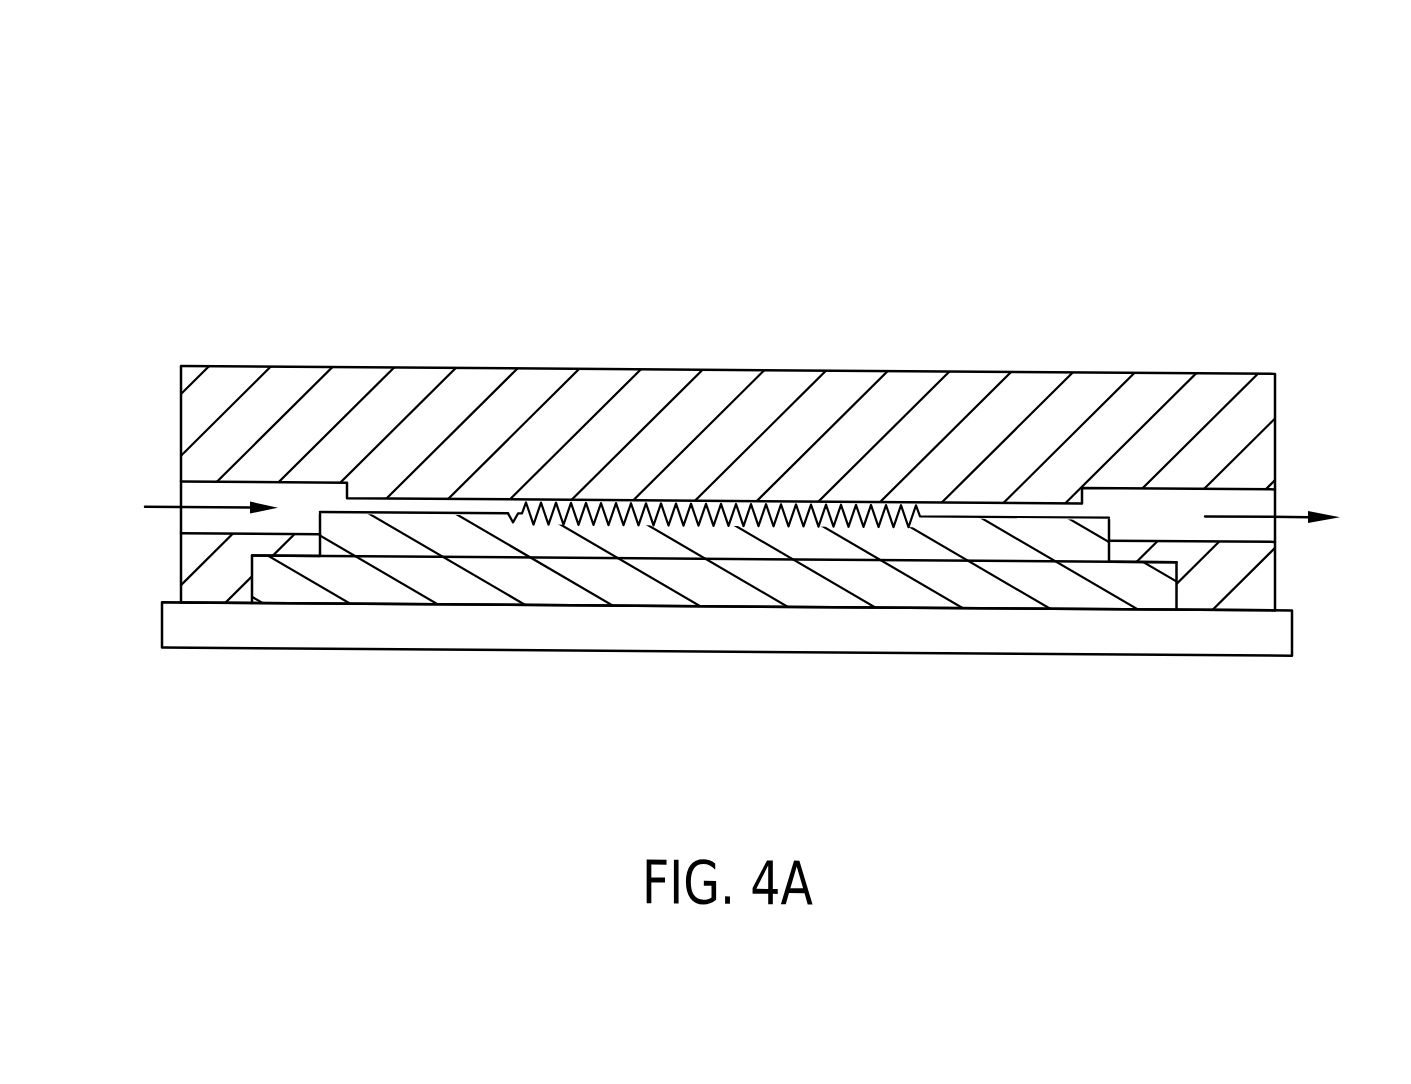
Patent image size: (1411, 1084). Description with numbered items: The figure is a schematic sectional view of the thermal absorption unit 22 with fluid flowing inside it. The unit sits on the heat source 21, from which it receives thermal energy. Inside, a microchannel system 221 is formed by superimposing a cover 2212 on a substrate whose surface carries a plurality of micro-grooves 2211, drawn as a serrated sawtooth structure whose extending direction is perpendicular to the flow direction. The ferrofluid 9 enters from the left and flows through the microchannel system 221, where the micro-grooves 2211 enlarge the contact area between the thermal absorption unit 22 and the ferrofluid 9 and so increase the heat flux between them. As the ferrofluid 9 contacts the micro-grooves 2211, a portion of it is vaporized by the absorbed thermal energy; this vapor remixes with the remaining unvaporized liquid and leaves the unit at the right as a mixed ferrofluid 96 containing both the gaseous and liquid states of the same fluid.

The thermal absorption unit 22 is at (182, 196).
The cover 2212 is at (903, 378).
The microchannel system 221 is at (955, 507).
The micro-grooves 2211 is at (822, 520).
The heat source 21 is at (428, 628).
The ferrofluid 9 is at (162, 507).
The mixed ferrofluid 96 is at (1293, 505).